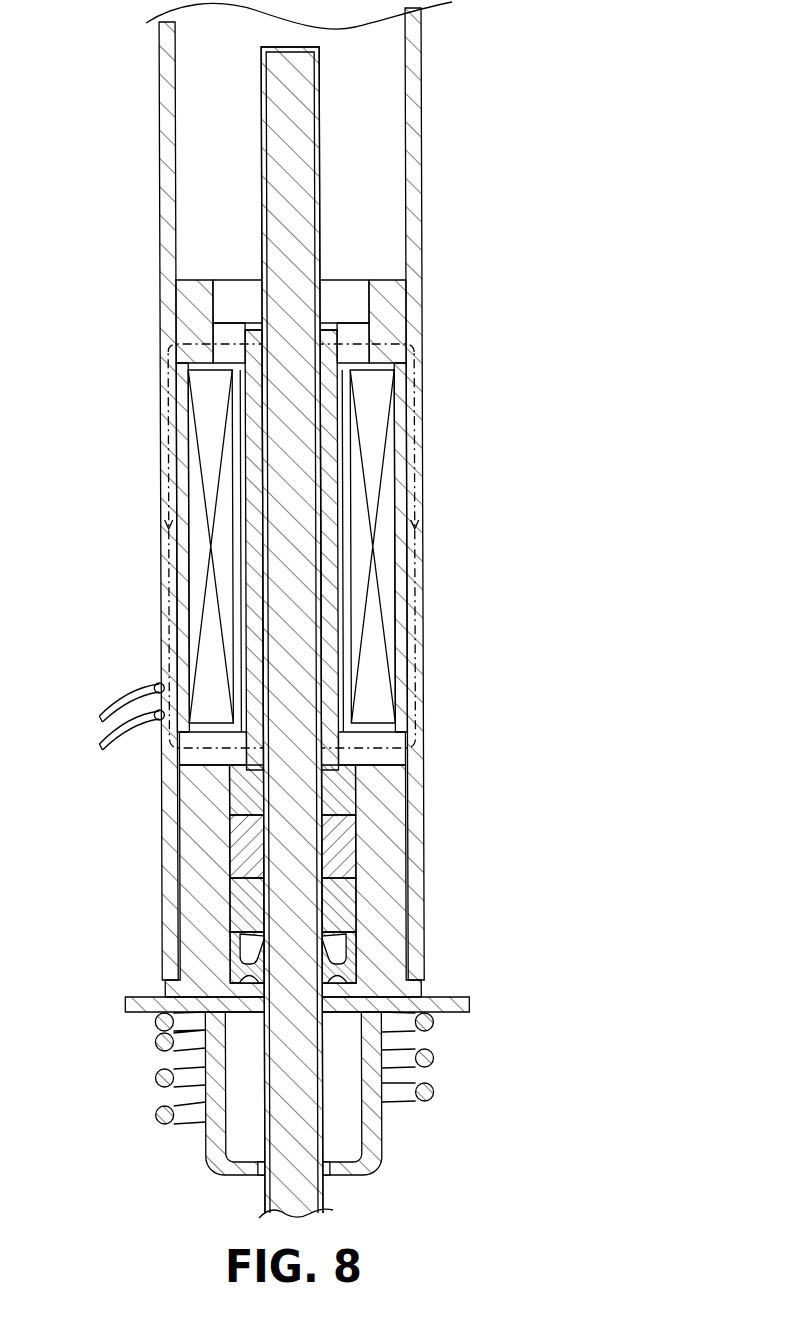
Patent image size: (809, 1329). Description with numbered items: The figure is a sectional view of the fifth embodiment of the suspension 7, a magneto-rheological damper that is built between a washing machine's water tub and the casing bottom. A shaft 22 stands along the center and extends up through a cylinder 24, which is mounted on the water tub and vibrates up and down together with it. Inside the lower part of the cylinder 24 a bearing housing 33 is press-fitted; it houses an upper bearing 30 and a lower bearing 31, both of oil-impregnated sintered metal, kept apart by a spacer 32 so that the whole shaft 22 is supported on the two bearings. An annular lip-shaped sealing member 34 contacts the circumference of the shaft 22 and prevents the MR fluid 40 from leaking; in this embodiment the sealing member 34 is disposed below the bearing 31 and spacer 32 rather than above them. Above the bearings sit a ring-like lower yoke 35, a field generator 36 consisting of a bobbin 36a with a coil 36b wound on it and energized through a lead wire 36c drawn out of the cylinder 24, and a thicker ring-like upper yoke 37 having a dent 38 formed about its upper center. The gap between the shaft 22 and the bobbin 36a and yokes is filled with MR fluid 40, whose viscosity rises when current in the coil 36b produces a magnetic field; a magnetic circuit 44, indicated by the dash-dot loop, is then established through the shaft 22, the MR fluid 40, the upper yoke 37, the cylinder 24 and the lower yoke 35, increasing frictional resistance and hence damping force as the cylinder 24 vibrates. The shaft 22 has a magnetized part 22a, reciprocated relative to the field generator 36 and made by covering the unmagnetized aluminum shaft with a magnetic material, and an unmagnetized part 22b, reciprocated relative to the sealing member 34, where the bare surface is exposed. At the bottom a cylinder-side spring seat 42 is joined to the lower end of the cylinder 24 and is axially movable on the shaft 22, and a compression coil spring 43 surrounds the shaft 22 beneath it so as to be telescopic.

The suspension 7 is at (118, 76).
The shaft 22 is at (261, 215).
The magnetized part of the shaft 22a is at (320, 140).
The unmagnetized part of the shaft 22b is at (343, 945).
The cylinder 24 is at (159, 181).
The bearing 30 is at (240, 800).
The bearing 31 is at (240, 905).
The spacer 32 is at (240, 850).
The bearing housing 33 is at (395, 838).
The sealing member 34 is at (353, 978).
The lower yoke 35 is at (418, 745).
The field generator 36 is at (414, 555).
The bobbin 36a is at (182, 497).
The coil 36b is at (210, 548).
The lead wire 36c is at (118, 698).
The upper yoke 37 is at (406, 304).
The dent 38 is at (345, 281).
The MR fluid 40 is at (334, 598).
The cylinder-side spring seat 42 is at (121, 1008).
The coil spring 43 is at (151, 1080).
The magnetic circuit 44 is at (172, 430).